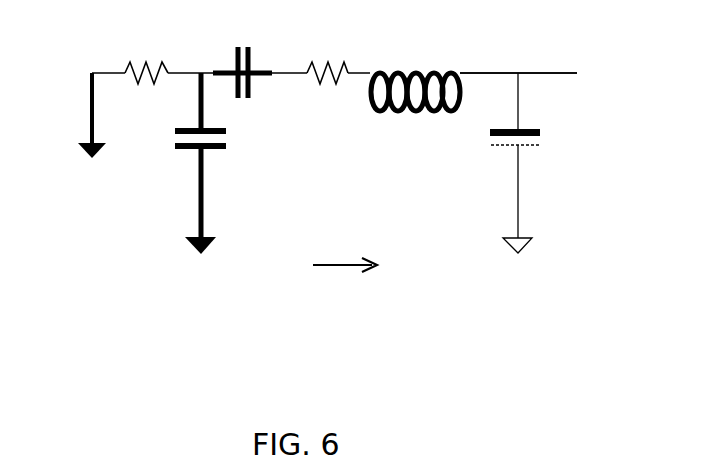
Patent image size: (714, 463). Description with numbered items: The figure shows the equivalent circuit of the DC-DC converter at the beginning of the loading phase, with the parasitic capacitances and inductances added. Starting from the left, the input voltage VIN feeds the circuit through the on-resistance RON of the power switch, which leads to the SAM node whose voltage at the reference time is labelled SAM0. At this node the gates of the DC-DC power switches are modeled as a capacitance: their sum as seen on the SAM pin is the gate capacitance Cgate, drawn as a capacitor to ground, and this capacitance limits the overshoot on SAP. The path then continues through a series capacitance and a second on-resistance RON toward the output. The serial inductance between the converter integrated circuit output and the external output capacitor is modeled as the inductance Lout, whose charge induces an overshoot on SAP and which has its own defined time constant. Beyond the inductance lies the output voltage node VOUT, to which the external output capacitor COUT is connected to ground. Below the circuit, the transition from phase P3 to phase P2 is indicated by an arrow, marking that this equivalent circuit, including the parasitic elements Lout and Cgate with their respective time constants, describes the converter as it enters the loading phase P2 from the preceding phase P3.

The input voltage VIN is at (83, 106).
The on-resistance RON is at (236, 62).
The SAM node voltage at reference time SAM0 is at (231, 79).
The gate capacitance Cgate is at (218, 163).
The serial inductance Lout is at (415, 77).
The output voltage VOUT is at (518, 63).
The output capacitor COUT is at (528, 163).
The phase P3 is at (268, 272).
The phase P2 is at (426, 272).